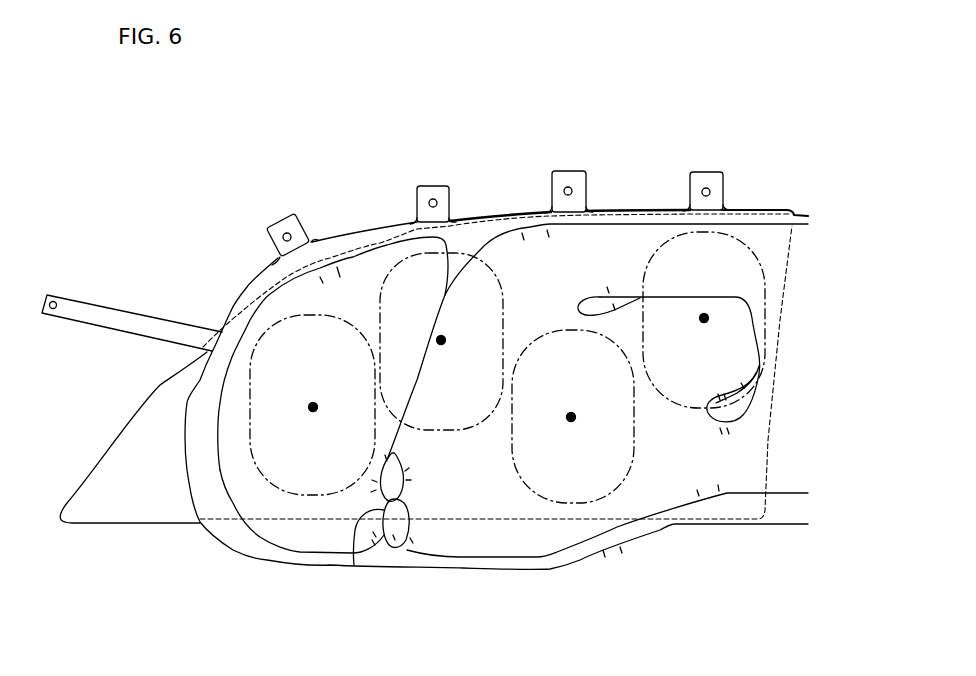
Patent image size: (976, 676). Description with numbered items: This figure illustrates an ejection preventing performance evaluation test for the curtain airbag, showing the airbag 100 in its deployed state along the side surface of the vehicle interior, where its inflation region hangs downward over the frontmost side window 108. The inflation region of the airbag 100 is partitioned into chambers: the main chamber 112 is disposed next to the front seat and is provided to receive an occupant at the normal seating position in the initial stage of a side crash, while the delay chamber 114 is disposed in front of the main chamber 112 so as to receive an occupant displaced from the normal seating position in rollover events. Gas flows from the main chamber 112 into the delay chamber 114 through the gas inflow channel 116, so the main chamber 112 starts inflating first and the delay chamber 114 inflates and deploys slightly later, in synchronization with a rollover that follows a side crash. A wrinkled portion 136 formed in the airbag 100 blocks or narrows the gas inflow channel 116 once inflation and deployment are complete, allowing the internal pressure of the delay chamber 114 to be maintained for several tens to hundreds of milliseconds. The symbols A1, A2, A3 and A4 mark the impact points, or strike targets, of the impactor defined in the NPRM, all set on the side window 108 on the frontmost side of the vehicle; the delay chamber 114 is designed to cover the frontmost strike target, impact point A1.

The airbag 100 is at (640, 182).
The side window 108 is at (125, 500).
The main chamber 112 is at (642, 480).
The delay chamber 114 is at (280, 283).
The gas inflow channel 116 is at (408, 512).
The wrinkled portion 136 is at (354, 565).
The impact point A1 is at (313, 407).
The impact point A2 is at (571, 417).
The impact point A3 is at (441, 340).
The impact point A4 is at (704, 318).